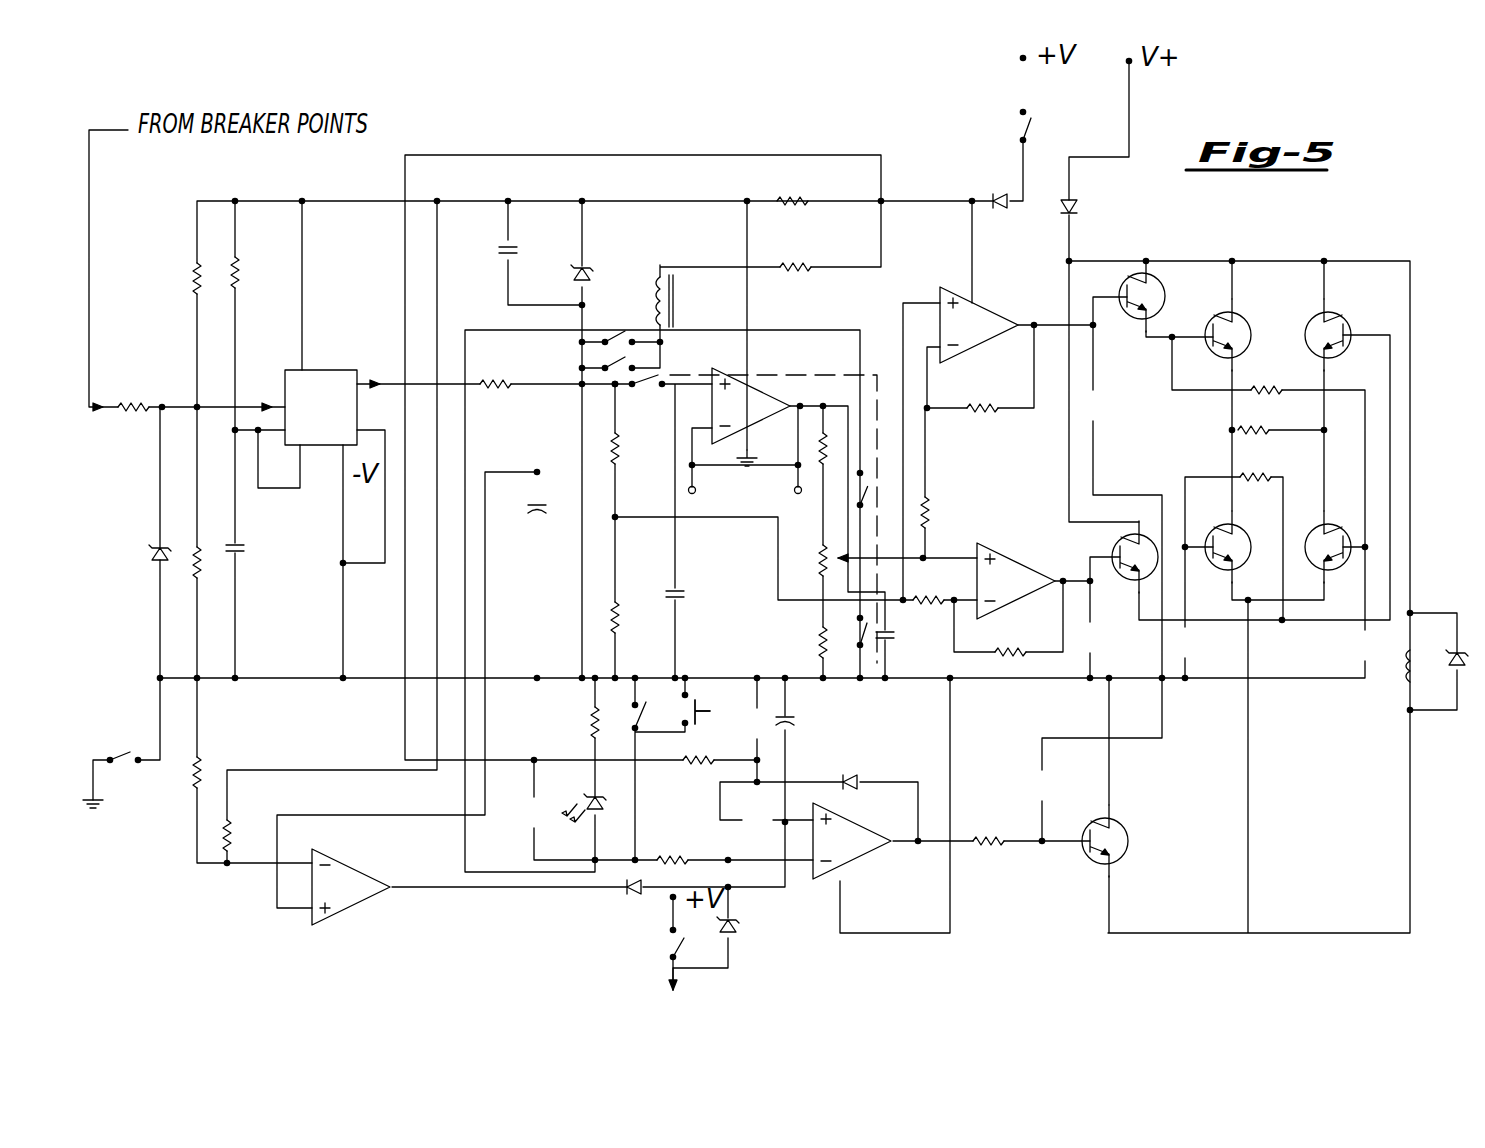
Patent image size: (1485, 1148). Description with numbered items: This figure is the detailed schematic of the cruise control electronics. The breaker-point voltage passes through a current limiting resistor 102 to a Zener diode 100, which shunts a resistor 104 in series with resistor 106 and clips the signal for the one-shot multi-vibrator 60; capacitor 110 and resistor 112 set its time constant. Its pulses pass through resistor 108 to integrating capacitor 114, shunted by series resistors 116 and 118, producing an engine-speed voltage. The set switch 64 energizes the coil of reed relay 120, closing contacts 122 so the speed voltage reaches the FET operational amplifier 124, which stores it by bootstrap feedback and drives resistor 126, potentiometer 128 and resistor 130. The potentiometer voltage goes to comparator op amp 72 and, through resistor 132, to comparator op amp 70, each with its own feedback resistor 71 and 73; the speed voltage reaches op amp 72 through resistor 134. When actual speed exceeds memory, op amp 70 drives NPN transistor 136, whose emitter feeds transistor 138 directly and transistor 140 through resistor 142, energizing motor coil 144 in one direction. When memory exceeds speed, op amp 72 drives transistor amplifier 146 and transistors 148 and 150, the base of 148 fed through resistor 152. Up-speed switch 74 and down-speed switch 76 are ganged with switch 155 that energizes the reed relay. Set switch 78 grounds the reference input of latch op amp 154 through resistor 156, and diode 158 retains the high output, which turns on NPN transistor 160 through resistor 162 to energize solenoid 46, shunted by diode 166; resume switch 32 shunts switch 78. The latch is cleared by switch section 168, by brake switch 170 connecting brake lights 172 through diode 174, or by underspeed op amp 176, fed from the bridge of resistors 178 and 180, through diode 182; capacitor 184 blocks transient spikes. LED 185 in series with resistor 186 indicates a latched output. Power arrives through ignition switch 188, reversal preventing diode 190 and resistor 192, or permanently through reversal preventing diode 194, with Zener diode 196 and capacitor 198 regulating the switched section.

The resume switch 32 is at (687, 730).
The solenoid coil 46 is at (1403, 668).
The one-shot multi-vibrator 60 is at (330, 372).
The set switch 64 is at (633, 312).
The comparator op amp 70 is at (980, 304).
The feedback resistor 71 is at (984, 401).
The comparator op amp 72 is at (1020, 592).
The feedback resistor 73 is at (1024, 660).
The up-speed switch 74 is at (867, 490).
The down-speed switch 76 is at (858, 636).
The set switch 78 is at (637, 724).
The Zener diode 100 is at (160, 552).
The current limiting resistor 102 is at (122, 405).
The resistor 104 is at (202, 563).
The resistor 106 is at (192, 288).
The resistor 108 is at (502, 376).
The capacitor 110 is at (244, 544).
The resistor 112 is at (239, 279).
The integrating capacitor 114 is at (528, 506).
The resistor 116 is at (620, 448).
The resistor 118 is at (618, 630).
The reed relay 120 is at (678, 296).
The normally opened contacts 122 is at (640, 387).
The field effect transistor operational amplifier 124 is at (770, 384).
The resistor 126 is at (828, 433).
The potentiometer 128 is at (820, 563).
The resistor 130 is at (816, 642).
The resistor 132 is at (932, 513).
The resistor 134 is at (932, 608).
The NPN transistor 136 is at (1150, 287).
The transistor 138 is at (1240, 327).
The transistor 140 is at (1334, 524).
The resistor 142 is at (1260, 384).
The coil of the drive motor 144 is at (1268, 434).
The NPN transistor amplifier 146 is at (1133, 580).
The transistor 148 is at (1230, 565).
The transistor 150 is at (1345, 328).
The resistor 152 is at (1260, 481).
The operational amplifier 154 is at (860, 838).
The switch 155 is at (612, 386).
The resistor 156 is at (670, 860).
The diode 158 is at (880, 764).
The NPN transistor 160 is at (1113, 856).
The resistor 162 is at (986, 854).
The diode 166 is at (1455, 675).
The switch section 168 is at (123, 760).
The brake switch 170 is at (667, 932).
The rear brake lights 172 is at (670, 974).
The diode 174 is at (735, 930).
The operational amplifier 176 is at (340, 905).
The resistor 178 is at (230, 838).
The resistor 180 is at (201, 763).
The diode 182 is at (630, 893).
The capacitor 184 is at (795, 723).
The light emitting diode 185 is at (605, 810).
The resistor 186 is at (590, 726).
The vehicle ignition switch 188 is at (1029, 128).
The reversal preventing diode 190 is at (1003, 210).
The resistor 192 is at (785, 210).
The reversal preventing diode 194 is at (1080, 206).
The Zener diode 196 is at (590, 270).
The capacitor 198 is at (516, 248).